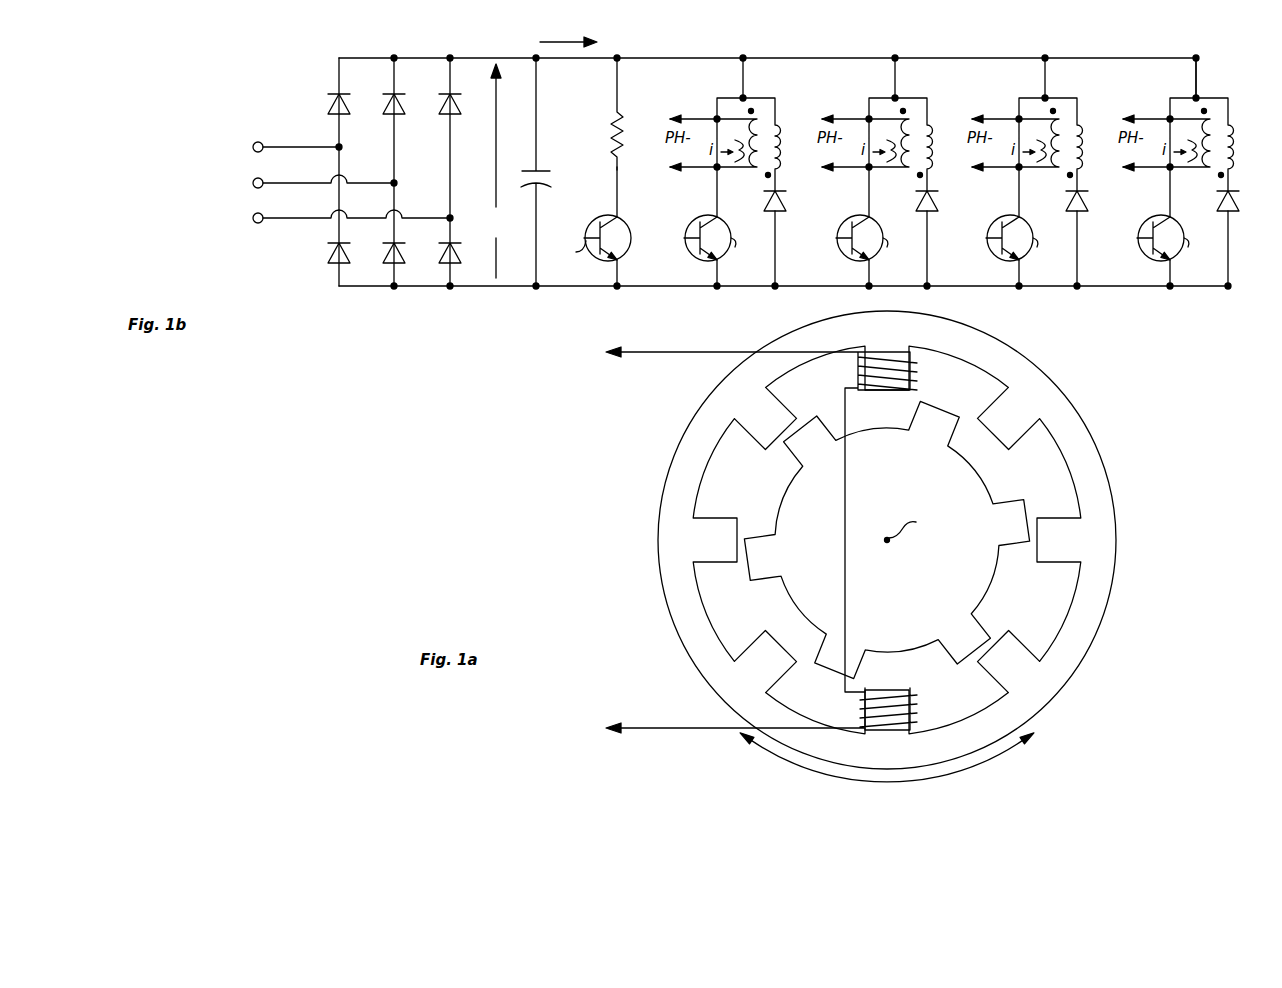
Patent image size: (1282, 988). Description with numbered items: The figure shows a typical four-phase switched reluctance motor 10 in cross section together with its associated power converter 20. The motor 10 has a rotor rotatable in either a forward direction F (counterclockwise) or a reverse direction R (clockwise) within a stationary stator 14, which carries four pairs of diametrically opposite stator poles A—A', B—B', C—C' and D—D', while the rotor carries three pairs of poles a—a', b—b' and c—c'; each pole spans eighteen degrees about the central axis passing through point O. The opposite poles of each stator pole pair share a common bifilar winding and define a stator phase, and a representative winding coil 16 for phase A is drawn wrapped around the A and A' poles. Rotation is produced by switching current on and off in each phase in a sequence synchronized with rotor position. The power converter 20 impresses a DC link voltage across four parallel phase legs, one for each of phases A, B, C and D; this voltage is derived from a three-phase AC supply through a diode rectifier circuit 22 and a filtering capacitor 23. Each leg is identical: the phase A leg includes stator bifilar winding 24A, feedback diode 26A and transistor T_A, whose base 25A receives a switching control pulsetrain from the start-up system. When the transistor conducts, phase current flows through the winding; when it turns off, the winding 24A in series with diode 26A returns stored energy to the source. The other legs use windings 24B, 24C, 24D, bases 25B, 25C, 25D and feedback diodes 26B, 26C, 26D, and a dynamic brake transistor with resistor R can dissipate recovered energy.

In FIG. 1A, the switched reluctance motor 10 is at (1178, 617).
In FIG. 1A, the stator 14 is at (1092, 462).
In FIG. 1A, the winding coil 16 is at (920, 364).
In FIG. 1B, the power converter 20 is at (871, 43).
In FIG. 1B, the diode rectifier circuit 22 is at (432, 154).
In FIG. 1B, the filtering capacitor 23 is at (541, 170).
In FIG. 1B, the stator bifilar winding 24A is at (776, 130).
In FIG. 1B, the stator bifilar winding 24B is at (928, 130).
In FIG. 1B, the stator bifilar winding 24C is at (1078, 130).
In FIG. 1B, the stator bifilar winding 24D is at (1229, 130).
In FIG. 1B, the base 25A is at (690, 252).
In FIG. 1B, the base 25B is at (842, 252).
In FIG. 1B, the base 25C is at (992, 252).
In FIG. 1B, the base 25D is at (1143, 252).
In FIG. 1B, the feedback diode 26A is at (787, 202).
In FIG. 1B, the feedback diode 26B is at (939, 202).
In FIG. 1B, the feedback diode 26C is at (1089, 202).
In FIG. 1B, the feedback diode 26D is at (1240, 202).